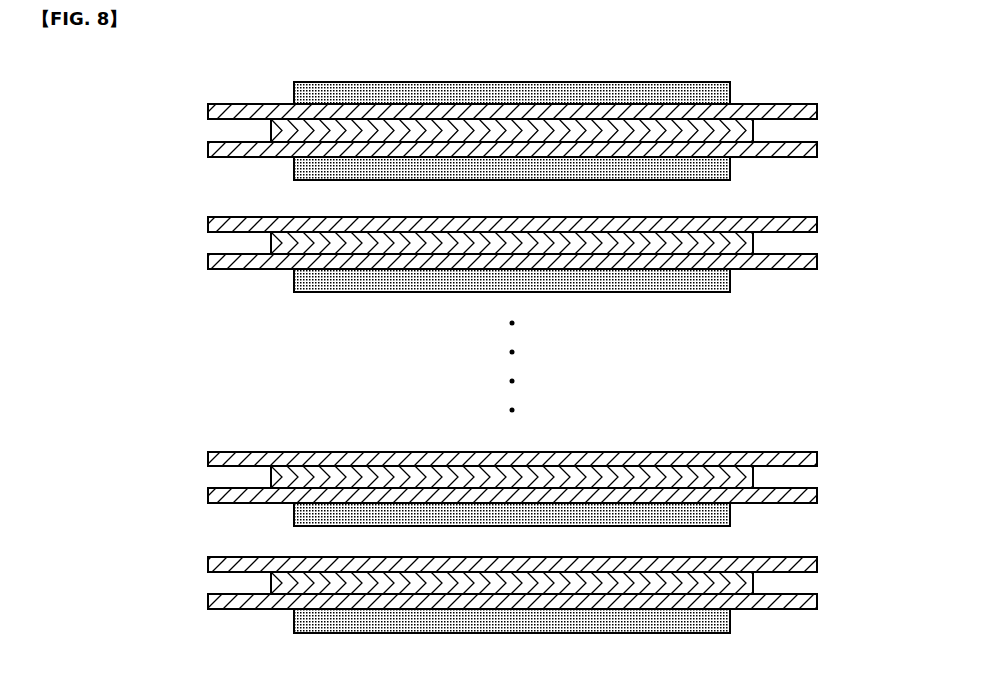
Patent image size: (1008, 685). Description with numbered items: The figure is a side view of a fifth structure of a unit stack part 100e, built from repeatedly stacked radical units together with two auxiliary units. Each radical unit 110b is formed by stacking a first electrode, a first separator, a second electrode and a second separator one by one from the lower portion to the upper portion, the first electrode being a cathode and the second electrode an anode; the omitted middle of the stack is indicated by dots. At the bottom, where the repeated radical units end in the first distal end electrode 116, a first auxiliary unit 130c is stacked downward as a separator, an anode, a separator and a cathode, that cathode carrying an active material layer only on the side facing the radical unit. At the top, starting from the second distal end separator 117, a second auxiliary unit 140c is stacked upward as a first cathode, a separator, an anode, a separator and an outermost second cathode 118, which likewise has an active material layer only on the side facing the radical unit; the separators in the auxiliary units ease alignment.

The unit stack part 100e is at (802, 83).
The second auxiliary unit 140c is at (127, 77).
The radical unit 110b is at (98, 210).
The first auxiliary unit 130c is at (128, 546).
The cathode 118 is at (297, 94).
The second distal end separator 117 is at (474, 215).
The first distal end electrode 116 is at (297, 517).